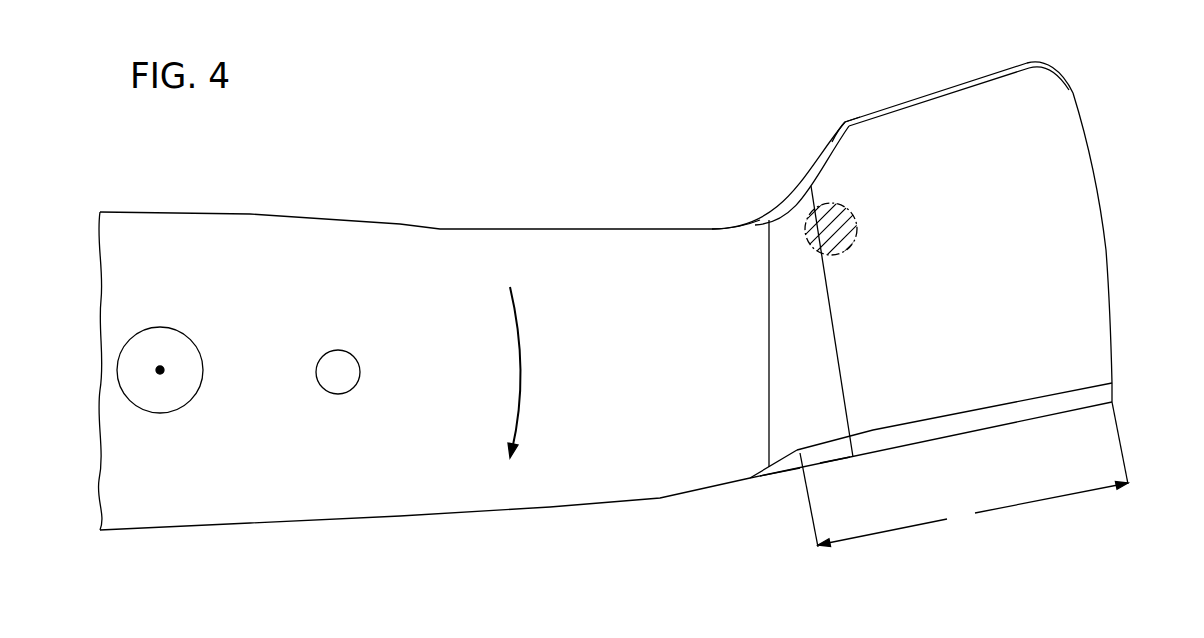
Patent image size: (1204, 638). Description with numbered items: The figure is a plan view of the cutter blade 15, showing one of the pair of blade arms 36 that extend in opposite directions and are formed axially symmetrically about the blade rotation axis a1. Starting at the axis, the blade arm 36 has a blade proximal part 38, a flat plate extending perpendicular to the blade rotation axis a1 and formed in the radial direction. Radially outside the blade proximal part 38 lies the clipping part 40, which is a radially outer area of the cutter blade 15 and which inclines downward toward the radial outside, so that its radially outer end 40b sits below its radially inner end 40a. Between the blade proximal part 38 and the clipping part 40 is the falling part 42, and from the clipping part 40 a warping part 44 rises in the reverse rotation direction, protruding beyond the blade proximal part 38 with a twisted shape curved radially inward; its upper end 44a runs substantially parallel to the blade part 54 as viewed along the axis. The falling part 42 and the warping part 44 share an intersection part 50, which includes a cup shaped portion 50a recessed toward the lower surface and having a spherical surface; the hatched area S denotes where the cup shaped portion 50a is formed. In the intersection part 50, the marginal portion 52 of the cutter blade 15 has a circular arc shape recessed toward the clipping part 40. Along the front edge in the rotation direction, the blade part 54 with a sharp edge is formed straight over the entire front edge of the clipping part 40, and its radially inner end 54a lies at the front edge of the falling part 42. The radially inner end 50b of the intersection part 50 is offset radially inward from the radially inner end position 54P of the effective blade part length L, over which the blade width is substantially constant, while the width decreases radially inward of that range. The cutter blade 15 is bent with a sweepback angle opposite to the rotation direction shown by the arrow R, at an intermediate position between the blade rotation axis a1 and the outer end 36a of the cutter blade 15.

The cutter blade 15 is at (397, 126).
The blade arm 36 is at (538, 207).
The outer end of the cutter blade 36a is at (1091, 148).
The blade proximal part 38 is at (340, 500).
The clipping part 40 is at (967, 373).
The radially inner end of the clipping part 40a is at (838, 322).
The radially outer end of the clipping part 40b is at (1095, 295).
The falling part 42 is at (810, 417).
The warping part 44 is at (960, 115).
The upper end of the warping part 44a is at (905, 100).
The intersection part 50 is at (783, 230).
The cup shaped portion 50a is at (834, 242).
The radially inner end of the intersection part 50b is at (767, 216).
The marginal portion 52 is at (795, 188).
The blade part 54 is at (905, 435).
The radially inner end of the blade part 54a is at (782, 471).
The radially inner end position of the effective blade part length 54P is at (797, 450).
The area where the cup shaped portion is formed S is at (857, 233).
The blade rotation axis a1 is at (161, 373).
The rotation direction arrow R is at (524, 372).
The effective blade part length L is at (964, 474).